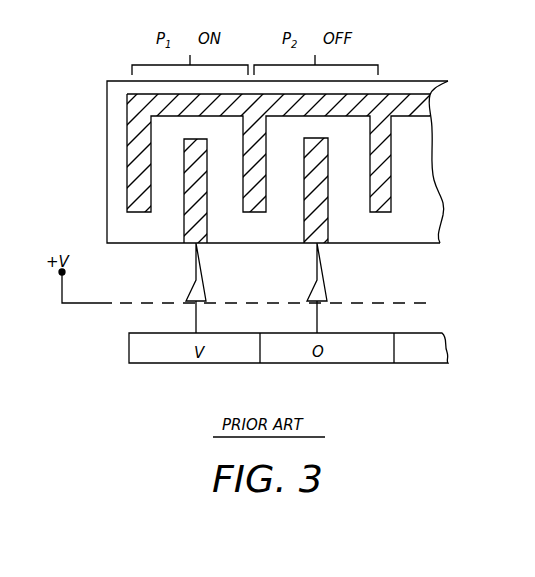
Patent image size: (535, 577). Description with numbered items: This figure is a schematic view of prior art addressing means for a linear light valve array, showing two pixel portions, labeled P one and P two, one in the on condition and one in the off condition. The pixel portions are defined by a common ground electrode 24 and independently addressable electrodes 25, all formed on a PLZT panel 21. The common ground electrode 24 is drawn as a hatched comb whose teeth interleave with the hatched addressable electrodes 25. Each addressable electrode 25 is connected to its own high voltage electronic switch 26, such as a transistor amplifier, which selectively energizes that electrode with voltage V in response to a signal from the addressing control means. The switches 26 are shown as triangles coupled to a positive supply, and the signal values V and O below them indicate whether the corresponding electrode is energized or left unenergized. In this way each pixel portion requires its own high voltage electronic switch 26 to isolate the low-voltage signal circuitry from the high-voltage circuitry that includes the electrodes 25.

The PLZT panel 21 is at (415, 228).
The common ground electrode 24 is at (133, 145).
The independently addressable electrodes 25 is at (190, 213).
The high voltage electronic switches 26 is at (203, 292).